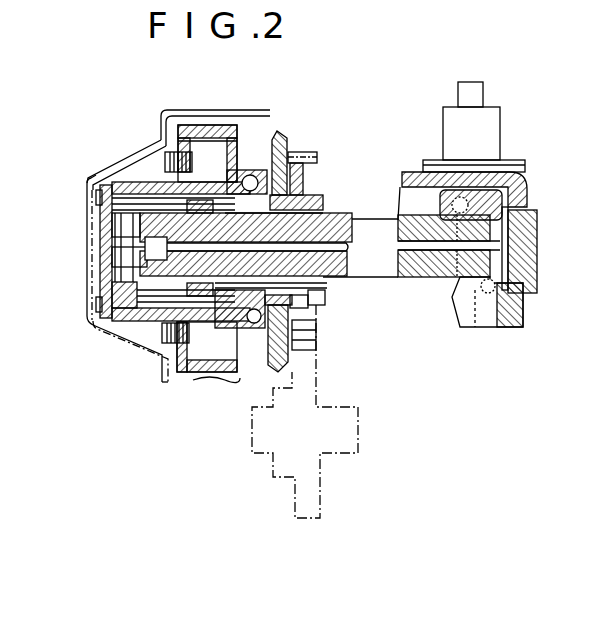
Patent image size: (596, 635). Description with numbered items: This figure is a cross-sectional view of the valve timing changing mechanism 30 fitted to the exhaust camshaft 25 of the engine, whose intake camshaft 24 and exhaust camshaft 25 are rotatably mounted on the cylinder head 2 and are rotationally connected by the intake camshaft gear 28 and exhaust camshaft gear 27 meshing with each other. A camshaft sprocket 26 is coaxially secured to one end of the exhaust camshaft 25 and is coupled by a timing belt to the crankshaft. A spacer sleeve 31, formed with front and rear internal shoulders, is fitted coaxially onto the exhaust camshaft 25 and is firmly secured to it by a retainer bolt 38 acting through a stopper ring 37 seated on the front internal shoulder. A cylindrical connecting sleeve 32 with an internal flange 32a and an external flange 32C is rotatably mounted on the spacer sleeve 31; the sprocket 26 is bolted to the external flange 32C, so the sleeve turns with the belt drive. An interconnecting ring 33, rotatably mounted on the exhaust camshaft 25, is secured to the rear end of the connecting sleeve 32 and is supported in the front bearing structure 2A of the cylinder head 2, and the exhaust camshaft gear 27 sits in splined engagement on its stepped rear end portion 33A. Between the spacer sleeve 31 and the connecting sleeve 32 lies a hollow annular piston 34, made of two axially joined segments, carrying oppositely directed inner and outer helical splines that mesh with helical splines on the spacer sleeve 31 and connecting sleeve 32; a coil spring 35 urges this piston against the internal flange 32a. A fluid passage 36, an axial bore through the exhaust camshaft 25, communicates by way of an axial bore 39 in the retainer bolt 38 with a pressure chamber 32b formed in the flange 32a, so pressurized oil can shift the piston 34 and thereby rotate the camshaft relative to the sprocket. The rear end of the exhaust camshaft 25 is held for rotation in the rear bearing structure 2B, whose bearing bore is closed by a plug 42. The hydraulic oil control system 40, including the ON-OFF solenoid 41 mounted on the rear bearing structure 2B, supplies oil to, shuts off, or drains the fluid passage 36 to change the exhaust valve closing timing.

The cylinder head 2 is at (403, 186).
The front bearing structure 2A is at (254, 170).
The rear bearing structure 2B is at (458, 290).
The intake camshaft 24 is at (345, 400).
The exhaust camshaft 25 is at (345, 216).
The camshaft sprocket 26 is at (193, 380).
The exhaust camshaft gear 27 is at (308, 152).
The intake camshaft gear 28 is at (330, 355).
The valve timing changing mechanism 30 is at (123, 333).
The spacer sleeve 31 is at (148, 320).
The connecting sleeve 32 is at (115, 180).
The internal flange 32a is at (100, 325).
The pressure chamber 32b is at (90, 183).
The external flange 32C is at (162, 139).
The interconnecting ring 33 is at (270, 334).
The stepped rear end portion 33A is at (326, 304).
The hollow annular piston 34 is at (140, 182).
The coil spring 35 is at (209, 182).
The fluid passage 36 is at (348, 248).
The stopper ring 37 is at (100, 295).
The retainer bolt 38 is at (103, 265).
The axial bore 39 is at (207, 347).
The hydraulic oil control system 40 is at (547, 171).
The ON-OFF solenoid 41 is at (500, 135).
The plug 42 is at (538, 242).